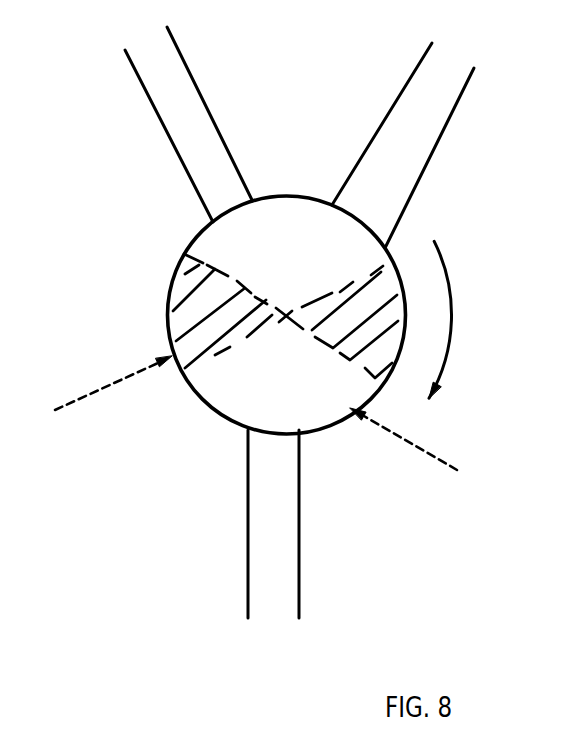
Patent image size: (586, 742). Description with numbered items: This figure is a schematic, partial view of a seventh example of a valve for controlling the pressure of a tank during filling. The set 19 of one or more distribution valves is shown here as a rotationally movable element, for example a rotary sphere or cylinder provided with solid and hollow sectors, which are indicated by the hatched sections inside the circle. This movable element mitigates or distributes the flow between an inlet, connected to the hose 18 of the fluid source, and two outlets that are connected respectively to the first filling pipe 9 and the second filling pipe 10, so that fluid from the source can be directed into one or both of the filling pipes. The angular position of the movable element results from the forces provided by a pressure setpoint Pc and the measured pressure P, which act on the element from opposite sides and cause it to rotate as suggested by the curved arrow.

The first filling pipe 9 is at (437, 127).
The second filling pipe 10 is at (147, 93).
The hose 18 is at (301, 573).
The set of distribution valves 19 is at (395, 250).
The measured pressure P is at (101, 395).
The pressure setpoint Pc is at (427, 450).